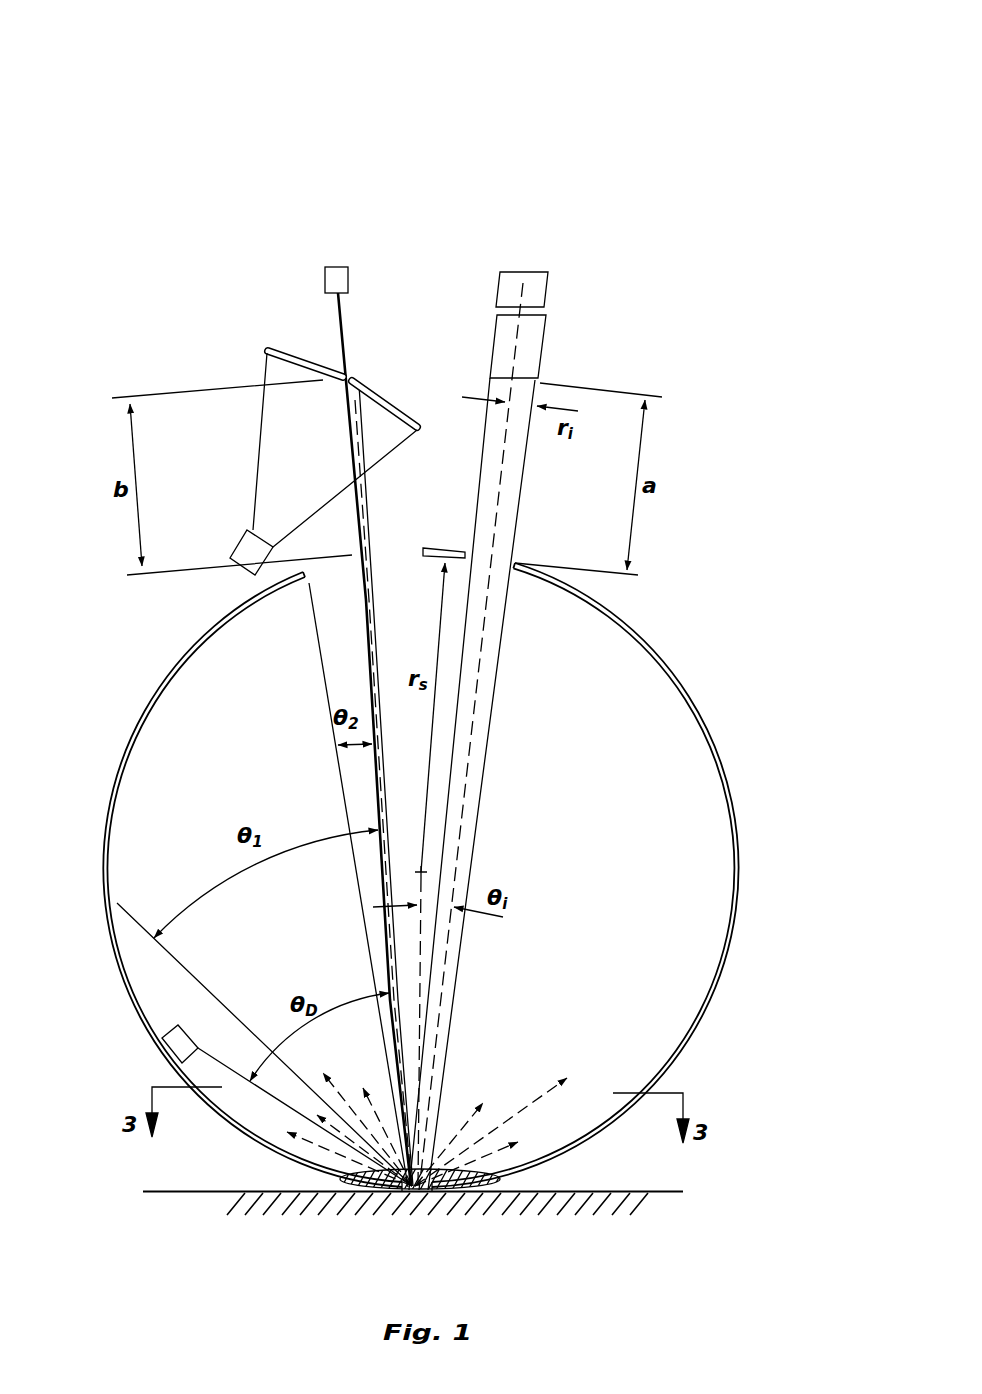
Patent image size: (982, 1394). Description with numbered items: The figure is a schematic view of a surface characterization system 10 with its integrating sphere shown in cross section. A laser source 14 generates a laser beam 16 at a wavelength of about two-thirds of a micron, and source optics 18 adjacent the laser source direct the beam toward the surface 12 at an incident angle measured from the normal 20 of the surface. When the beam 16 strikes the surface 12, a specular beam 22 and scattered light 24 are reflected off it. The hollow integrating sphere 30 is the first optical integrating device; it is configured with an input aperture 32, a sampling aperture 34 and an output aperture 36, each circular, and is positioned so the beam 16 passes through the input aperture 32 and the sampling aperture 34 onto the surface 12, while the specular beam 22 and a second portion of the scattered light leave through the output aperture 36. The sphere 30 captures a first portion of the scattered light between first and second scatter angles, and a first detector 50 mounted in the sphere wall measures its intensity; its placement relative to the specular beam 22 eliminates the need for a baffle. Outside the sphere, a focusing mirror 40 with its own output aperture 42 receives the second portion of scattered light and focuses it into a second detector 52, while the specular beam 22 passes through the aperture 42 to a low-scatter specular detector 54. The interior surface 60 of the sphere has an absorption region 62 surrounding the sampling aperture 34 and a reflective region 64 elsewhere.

The surface characterization system 10 is at (280, 148).
The surface 12 is at (618, 1193).
The laser source 14 is at (537, 290).
The laser beam 16 is at (514, 488).
The source optics 18 is at (534, 347).
The normal 20 is at (420, 890).
The specular beam 22 is at (344, 322).
The scattered light 24 is at (478, 1106).
The integrating sphere 30 is at (690, 696).
The input aperture 32 is at (515, 562).
The sampling aperture 34 is at (407, 1193).
The output aperture 36 is at (400, 544).
The focusing mirror 40 is at (407, 412).
The output aperture of mirror 42 is at (354, 374).
The first detector 50 is at (180, 1043).
The second detector 52 is at (247, 547).
The specular detector 54 is at (328, 278).
The interior surface 60 is at (702, 971).
The absorption region 62 is at (478, 1177).
The reflective region 64 is at (606, 884).